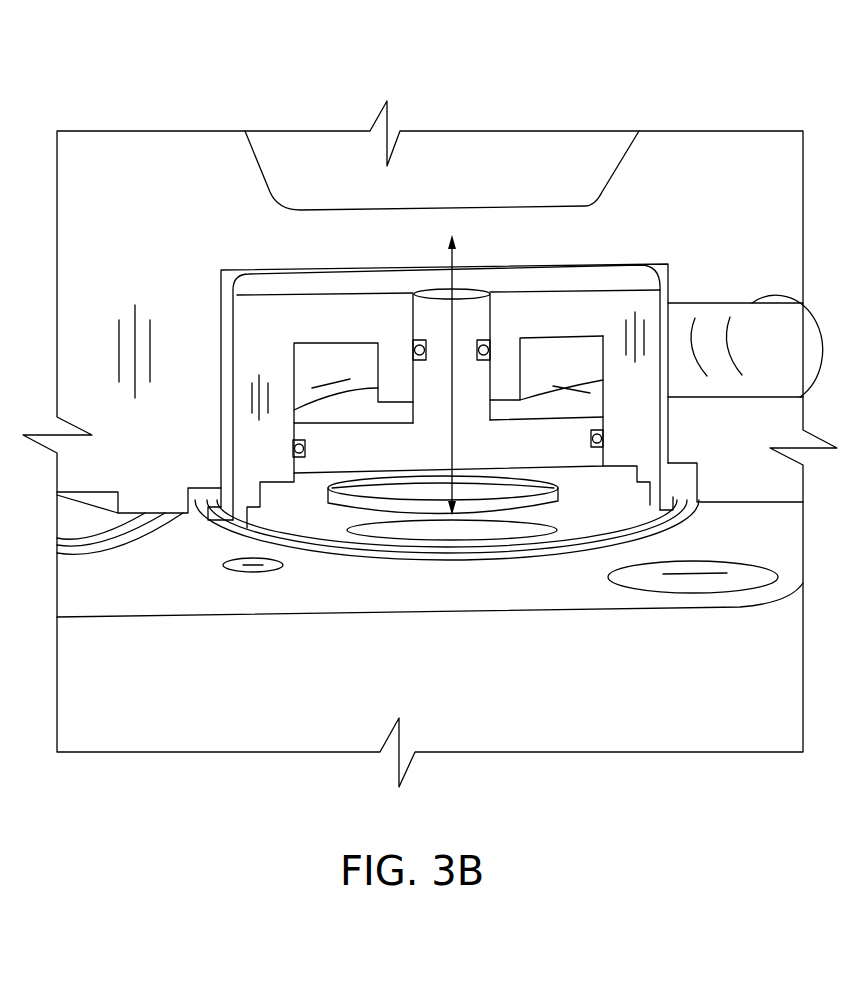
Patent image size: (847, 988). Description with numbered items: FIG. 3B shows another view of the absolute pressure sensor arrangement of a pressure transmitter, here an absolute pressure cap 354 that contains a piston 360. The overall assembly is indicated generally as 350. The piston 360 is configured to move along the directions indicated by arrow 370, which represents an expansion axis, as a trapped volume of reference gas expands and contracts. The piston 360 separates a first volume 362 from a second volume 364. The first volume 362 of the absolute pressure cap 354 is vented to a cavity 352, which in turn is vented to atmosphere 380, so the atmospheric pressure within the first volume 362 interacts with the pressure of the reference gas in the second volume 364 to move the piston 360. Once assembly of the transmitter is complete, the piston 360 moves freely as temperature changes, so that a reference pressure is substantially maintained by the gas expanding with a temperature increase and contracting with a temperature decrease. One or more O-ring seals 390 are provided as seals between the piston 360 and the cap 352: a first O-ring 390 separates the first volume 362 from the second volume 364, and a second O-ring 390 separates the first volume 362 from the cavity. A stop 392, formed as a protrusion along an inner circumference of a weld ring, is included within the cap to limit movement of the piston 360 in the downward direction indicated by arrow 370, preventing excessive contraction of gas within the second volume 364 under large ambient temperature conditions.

The valve assembly 350 is at (712, 96).
The cavity 352 is at (658, 266).
The absolute pressure cap 354 is at (640, 300).
The piston 360 is at (347, 440).
The first volume 362 is at (575, 356).
The second volume 364 is at (552, 513).
The arrow 370 is at (453, 317).
The atmosphere 380 is at (442, 170).
The O-ring seals 390 is at (412, 350).
The stop 392 is at (336, 516).